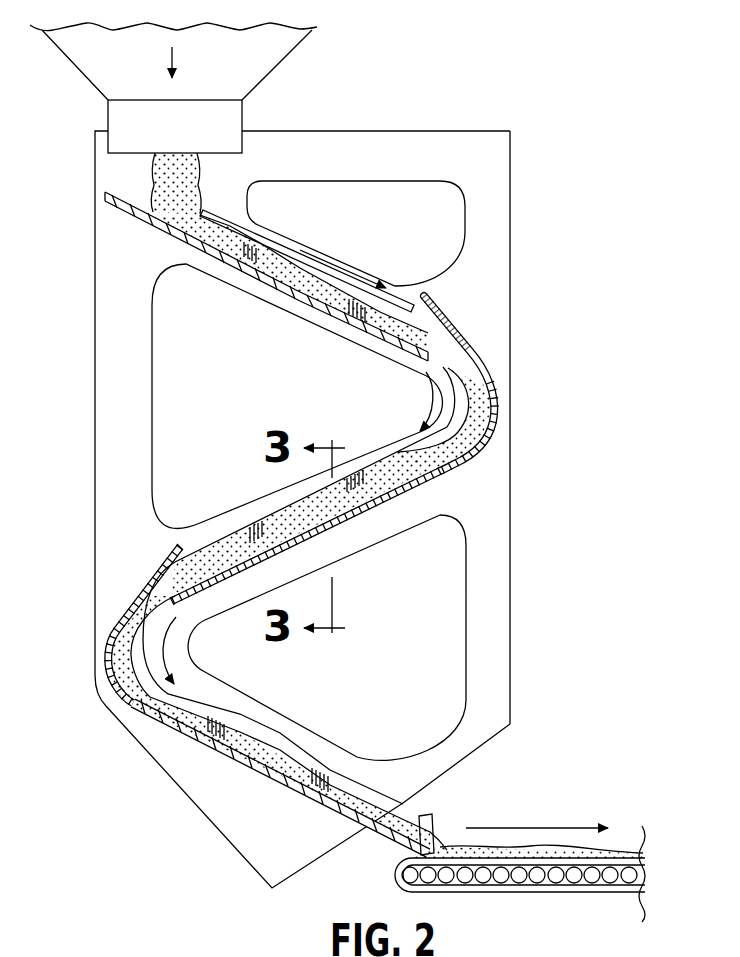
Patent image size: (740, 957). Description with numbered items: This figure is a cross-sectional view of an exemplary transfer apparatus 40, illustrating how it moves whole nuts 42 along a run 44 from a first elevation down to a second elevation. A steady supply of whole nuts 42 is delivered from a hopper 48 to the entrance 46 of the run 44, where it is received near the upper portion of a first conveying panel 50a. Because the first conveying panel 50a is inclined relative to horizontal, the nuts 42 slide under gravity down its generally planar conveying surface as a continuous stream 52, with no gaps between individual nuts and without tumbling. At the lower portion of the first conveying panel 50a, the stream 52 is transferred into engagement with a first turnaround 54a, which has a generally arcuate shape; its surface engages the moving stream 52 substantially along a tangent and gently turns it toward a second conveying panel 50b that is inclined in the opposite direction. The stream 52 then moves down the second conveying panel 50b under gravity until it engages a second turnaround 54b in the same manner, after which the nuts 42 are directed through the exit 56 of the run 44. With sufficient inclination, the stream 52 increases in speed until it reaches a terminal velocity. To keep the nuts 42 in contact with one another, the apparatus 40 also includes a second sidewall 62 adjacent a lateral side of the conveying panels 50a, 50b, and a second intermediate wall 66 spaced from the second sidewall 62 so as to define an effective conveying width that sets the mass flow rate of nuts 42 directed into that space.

The transfer apparatus 40 is at (592, 91).
The whole nuts 42 is at (155, 175).
The run 44 is at (499, 344).
The entrance 46 is at (105, 153).
The hopper 48 is at (274, 73).
The first conveying panel 50a is at (292, 293).
The second conveying panel 50b is at (430, 482).
The continuous stream 52 is at (284, 524).
The first turnaround 54a is at (492, 428).
The second turnaround 54b is at (110, 657).
The exit 56 is at (415, 823).
The second sidewall 62 is at (398, 131).
The second intermediate wall 66 is at (397, 300).